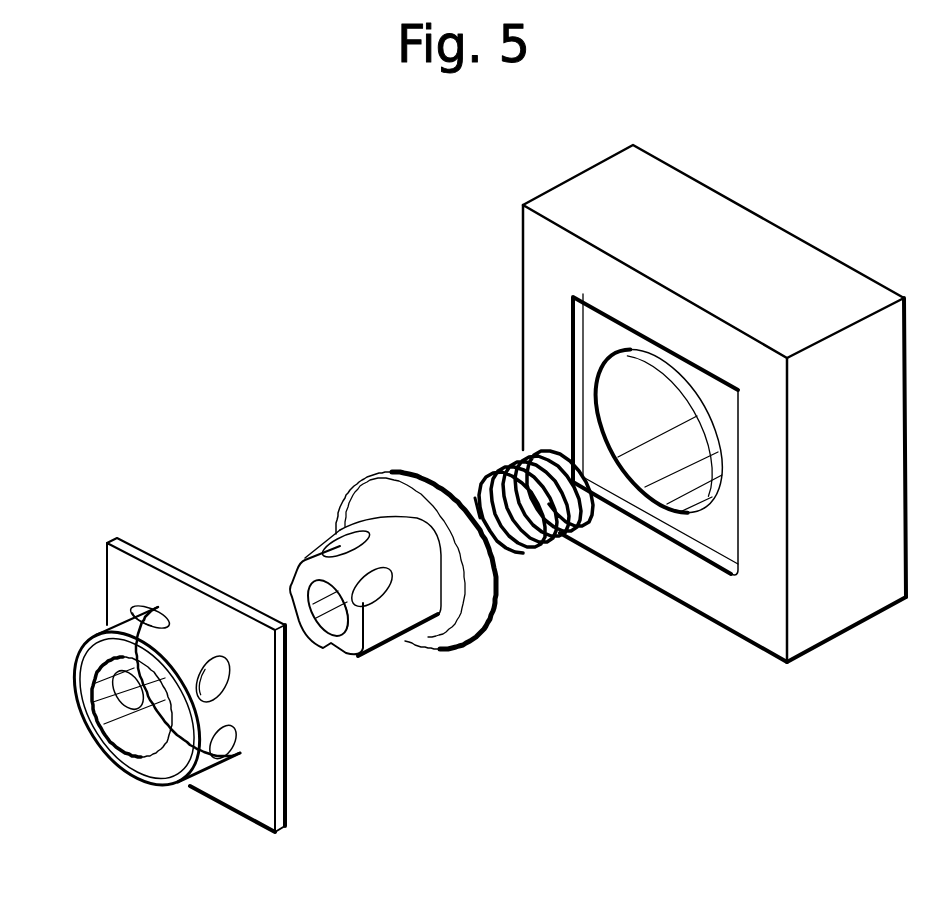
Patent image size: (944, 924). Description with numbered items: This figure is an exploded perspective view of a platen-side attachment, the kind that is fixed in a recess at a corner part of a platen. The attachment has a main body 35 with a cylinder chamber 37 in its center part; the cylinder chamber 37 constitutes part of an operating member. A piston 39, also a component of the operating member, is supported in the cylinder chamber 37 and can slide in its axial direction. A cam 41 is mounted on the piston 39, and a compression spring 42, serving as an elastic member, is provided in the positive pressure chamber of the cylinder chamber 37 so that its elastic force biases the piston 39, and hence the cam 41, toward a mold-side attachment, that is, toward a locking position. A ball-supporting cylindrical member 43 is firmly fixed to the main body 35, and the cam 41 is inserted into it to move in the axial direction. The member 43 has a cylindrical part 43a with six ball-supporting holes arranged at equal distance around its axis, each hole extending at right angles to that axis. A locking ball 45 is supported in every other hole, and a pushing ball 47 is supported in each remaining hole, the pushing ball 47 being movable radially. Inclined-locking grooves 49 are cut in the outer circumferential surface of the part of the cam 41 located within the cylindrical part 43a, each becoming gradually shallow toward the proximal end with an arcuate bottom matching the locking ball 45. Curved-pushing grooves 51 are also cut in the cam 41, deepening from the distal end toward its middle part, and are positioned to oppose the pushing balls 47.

The main body 35 is at (733, 247).
The cylinder chamber 37 is at (673, 453).
The piston 39 is at (395, 490).
The cam 41 is at (338, 535).
The compression spring 42 is at (502, 475).
The ball-supporting cylindrical member 43 is at (292, 757).
The cylindrical part 43a is at (131, 610).
The locking ball 45 is at (213, 683).
The pushing ball 47 is at (226, 757).
The inclined-locking groove 49 is at (370, 585).
The curved-pushing groove 51 is at (327, 552).